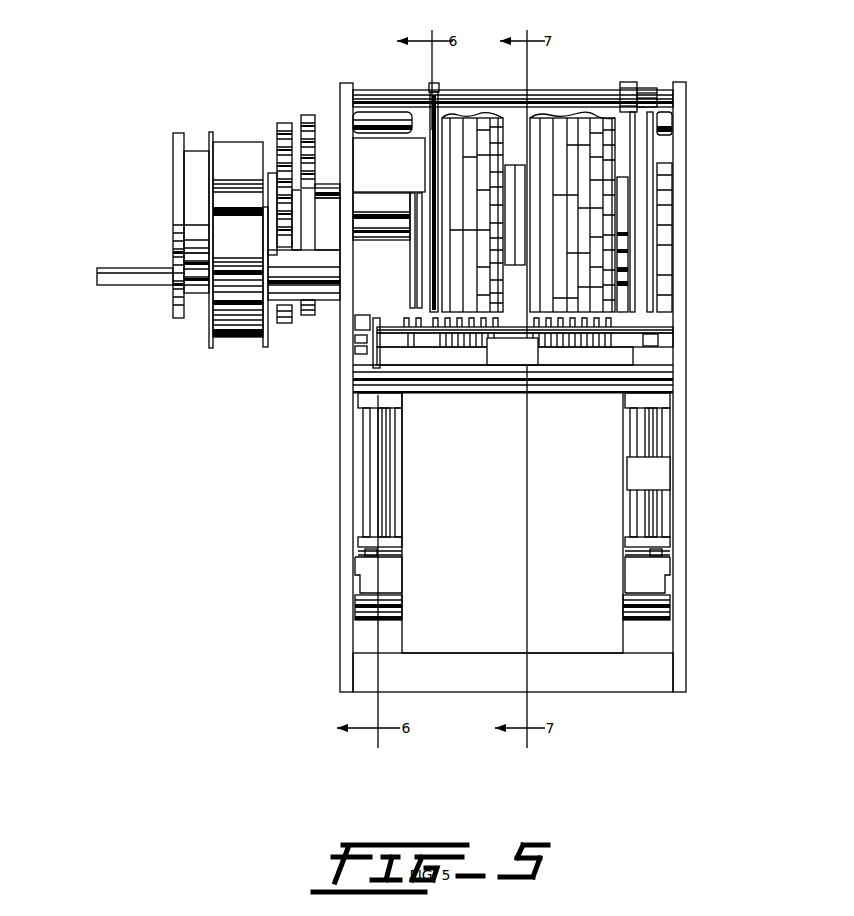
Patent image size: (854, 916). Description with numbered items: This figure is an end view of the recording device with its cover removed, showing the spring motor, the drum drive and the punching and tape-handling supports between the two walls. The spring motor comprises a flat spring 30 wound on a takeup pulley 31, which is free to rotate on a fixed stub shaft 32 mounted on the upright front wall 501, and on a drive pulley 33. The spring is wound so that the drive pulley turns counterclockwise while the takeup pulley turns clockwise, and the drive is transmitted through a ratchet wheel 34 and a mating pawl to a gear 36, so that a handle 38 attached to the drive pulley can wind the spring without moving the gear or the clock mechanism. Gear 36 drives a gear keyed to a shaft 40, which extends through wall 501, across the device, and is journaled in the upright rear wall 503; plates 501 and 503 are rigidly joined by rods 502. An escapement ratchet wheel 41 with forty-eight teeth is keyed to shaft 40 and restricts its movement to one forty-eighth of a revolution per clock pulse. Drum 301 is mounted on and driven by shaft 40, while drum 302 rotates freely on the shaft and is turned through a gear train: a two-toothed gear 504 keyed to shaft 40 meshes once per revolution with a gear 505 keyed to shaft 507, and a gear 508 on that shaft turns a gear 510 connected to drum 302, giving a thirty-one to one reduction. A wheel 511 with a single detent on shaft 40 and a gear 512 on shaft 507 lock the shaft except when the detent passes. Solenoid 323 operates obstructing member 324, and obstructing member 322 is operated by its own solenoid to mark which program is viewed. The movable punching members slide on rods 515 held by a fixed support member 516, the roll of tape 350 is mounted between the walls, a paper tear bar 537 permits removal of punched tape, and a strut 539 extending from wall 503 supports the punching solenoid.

The flat spring 30 is at (233, 338).
The takeup pulley 31 is at (208, 337).
The stub shaft 32 is at (327, 303).
The drive pulley 33 is at (213, 136).
The ratchet wheel 34 is at (271, 173).
The gear 36 is at (290, 126).
The handle 38 is at (161, 287).
The shaft 40 is at (321, 186).
The ratchet wheel 41 is at (315, 132).
The drum 301 is at (583, 113).
The drum 302 is at (478, 113).
The obstructing member 322 is at (418, 280).
The solenoid 323 is at (389, 165).
The obstructing member 324 is at (411, 262).
The roll of tape 350 is at (561, 482).
The upright front wall 501 is at (340, 498).
The rods 502 is at (365, 117).
The upright rear wall 503 is at (678, 528).
The gear 504 is at (634, 167).
The gear 505 is at (636, 82).
The shaft 507 is at (612, 90).
The gear 508 is at (436, 87).
The gear 510 is at (432, 126).
The wheel 511 is at (647, 133).
The gear 512 is at (657, 89).
The rods 515 is at (396, 340).
The fixed support member 516 is at (669, 569).
The paper tear bar 537 is at (665, 383).
The strut 539 is at (666, 481).